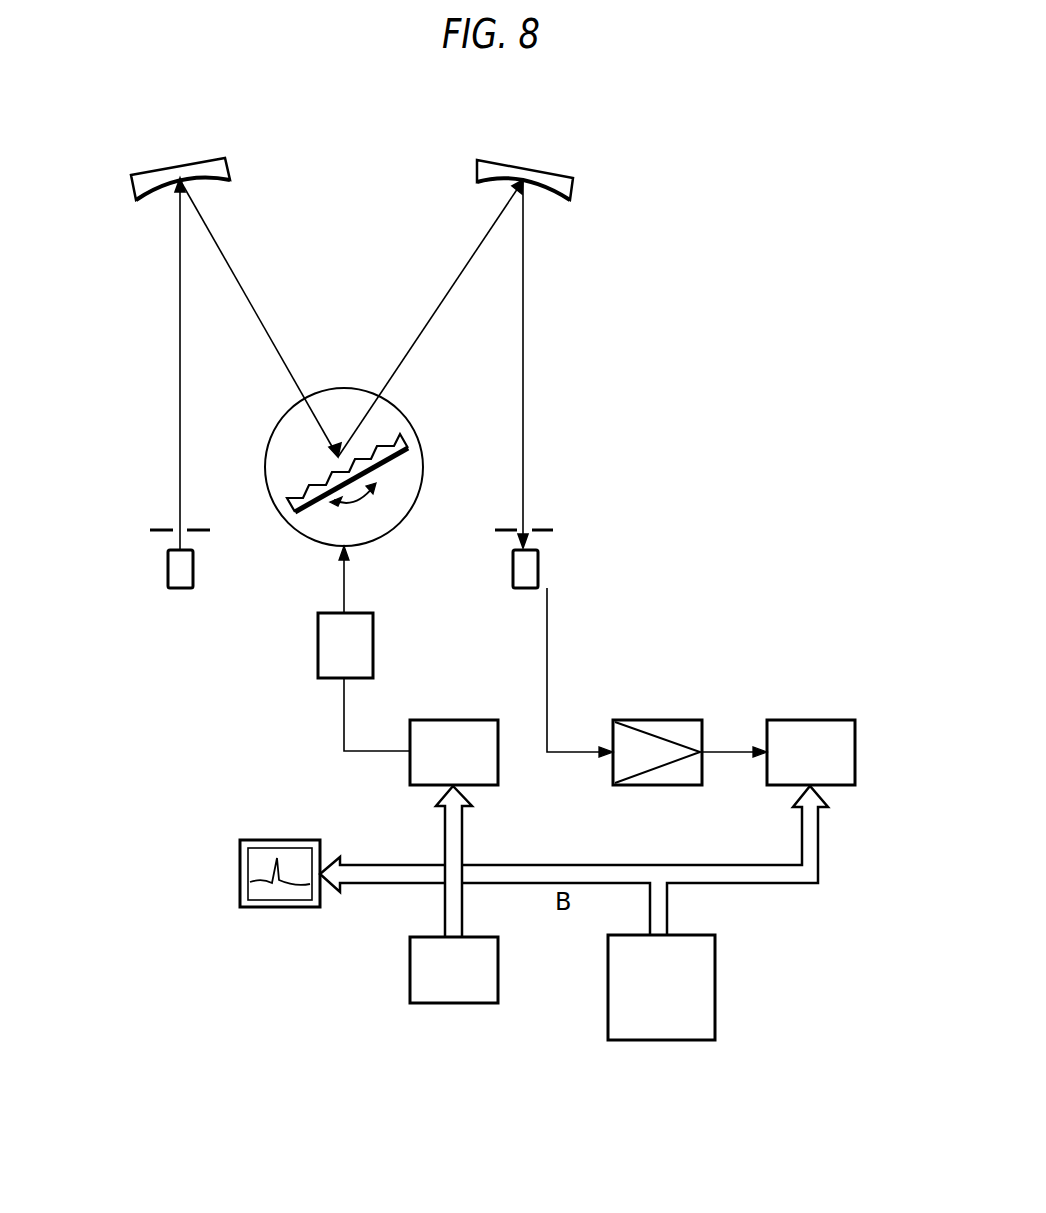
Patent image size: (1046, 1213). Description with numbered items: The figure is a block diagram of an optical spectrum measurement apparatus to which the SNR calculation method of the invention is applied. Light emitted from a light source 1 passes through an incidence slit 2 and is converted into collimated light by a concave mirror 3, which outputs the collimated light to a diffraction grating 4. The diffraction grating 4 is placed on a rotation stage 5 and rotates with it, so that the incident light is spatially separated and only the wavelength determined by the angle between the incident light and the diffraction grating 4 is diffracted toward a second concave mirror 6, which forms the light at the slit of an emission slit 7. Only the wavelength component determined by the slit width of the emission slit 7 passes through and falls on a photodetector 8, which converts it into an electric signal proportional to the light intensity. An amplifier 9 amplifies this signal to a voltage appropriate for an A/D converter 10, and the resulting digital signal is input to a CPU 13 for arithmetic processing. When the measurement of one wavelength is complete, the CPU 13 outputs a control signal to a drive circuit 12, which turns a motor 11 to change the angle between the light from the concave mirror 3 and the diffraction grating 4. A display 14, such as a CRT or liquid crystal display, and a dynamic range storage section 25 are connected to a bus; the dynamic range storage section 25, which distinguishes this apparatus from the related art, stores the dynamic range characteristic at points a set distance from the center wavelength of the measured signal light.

The light source 1 is at (168, 568).
The incidence slit 2 is at (165, 530).
The concave mirror 3 is at (180, 168).
The diffraction grating 4 is at (404, 440).
The rotation stage 5 is at (423, 465).
The concave mirror 6 is at (526, 168).
The emission slit 7 is at (542, 530).
The photodetector 8 is at (538, 565).
The amplifier 9 is at (656, 720).
The A/D converter 10 is at (855, 757).
The motor 11 is at (318, 648).
The drive circuit 12 is at (452, 720).
The CPU 13 is at (410, 970).
The display 14 is at (280, 840).
The dynamic range storage section 25 is at (715, 975).